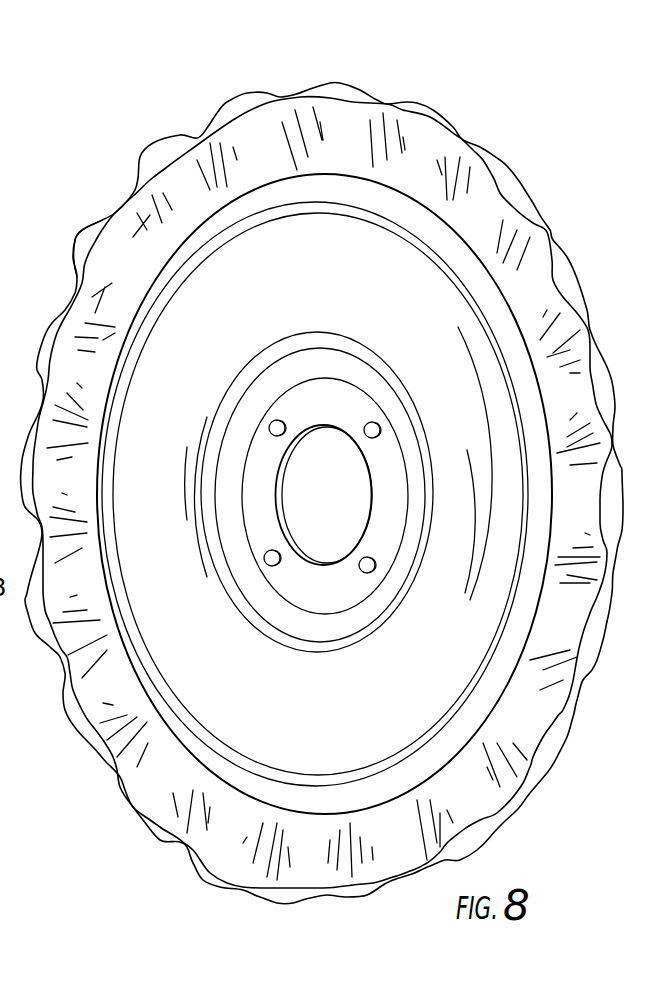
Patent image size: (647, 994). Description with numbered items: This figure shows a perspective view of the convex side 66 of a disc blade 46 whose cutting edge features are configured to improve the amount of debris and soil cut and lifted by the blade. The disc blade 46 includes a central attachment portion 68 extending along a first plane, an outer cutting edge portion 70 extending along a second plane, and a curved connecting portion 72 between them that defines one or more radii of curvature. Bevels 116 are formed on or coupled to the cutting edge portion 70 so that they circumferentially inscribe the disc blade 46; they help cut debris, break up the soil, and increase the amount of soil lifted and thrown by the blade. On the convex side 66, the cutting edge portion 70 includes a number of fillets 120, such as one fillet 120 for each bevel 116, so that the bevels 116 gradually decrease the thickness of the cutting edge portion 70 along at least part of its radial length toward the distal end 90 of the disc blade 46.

The disc blade 46 is at (138, 100).
The convex side 66 is at (526, 120).
The attachment portion 68 is at (335, 420).
The cutting edge portion 70 is at (183, 188).
The curved connecting portion 72 is at (313, 287).
The distal end 90 is at (77, 233).
The bevels 116 is at (333, 110).
The fillets 120 is at (43, 347).